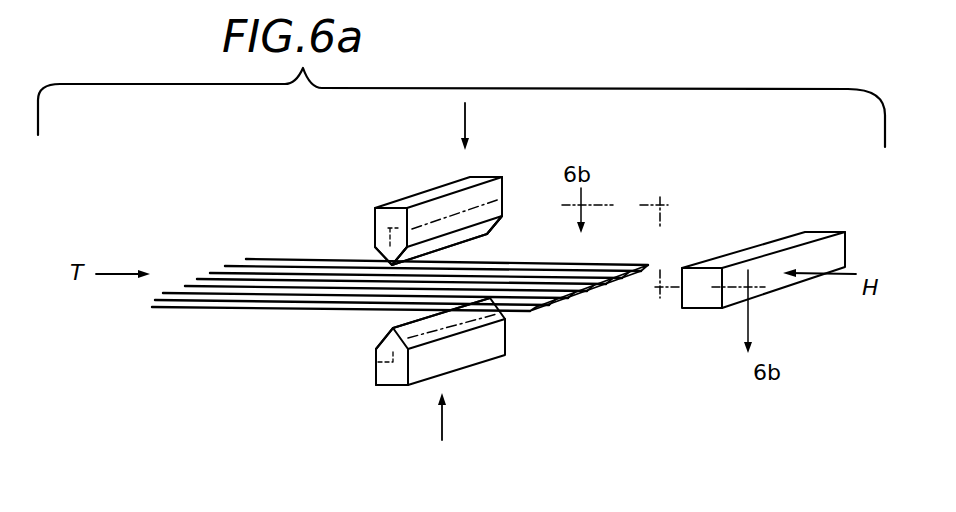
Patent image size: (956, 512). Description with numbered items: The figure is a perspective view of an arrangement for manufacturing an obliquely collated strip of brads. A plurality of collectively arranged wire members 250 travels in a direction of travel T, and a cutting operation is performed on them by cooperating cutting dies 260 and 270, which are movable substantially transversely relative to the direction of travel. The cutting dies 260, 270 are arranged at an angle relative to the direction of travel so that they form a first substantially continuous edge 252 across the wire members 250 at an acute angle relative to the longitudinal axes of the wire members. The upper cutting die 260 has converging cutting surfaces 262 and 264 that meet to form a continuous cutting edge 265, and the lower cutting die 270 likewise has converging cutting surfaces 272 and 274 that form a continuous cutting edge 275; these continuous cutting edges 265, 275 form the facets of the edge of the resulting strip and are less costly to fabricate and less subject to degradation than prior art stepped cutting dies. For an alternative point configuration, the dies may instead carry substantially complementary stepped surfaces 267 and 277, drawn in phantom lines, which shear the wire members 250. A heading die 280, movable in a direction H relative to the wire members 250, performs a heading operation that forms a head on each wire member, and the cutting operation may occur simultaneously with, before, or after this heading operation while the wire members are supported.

The plurality of collectively arranged wire members 250 is at (283, 252).
The first substantially continuous edge 252 is at (585, 291).
The cutting die 260 is at (518, 180).
The converging cutting surface 262 is at (372, 258).
The converging cutting surface 264 is at (473, 236).
The continuous cutting edge 265 is at (473, 247).
The substantially complementary stepped surface 267 is at (443, 215).
The cutting die 270 is at (411, 395).
The converging cutting surface 272 is at (387, 335).
The converging cutting surface 274 is at (450, 323).
The continuous cutting edge 275 is at (433, 310).
The substantially complementary stepped surface 277 is at (373, 362).
The heading die 280 is at (744, 235).